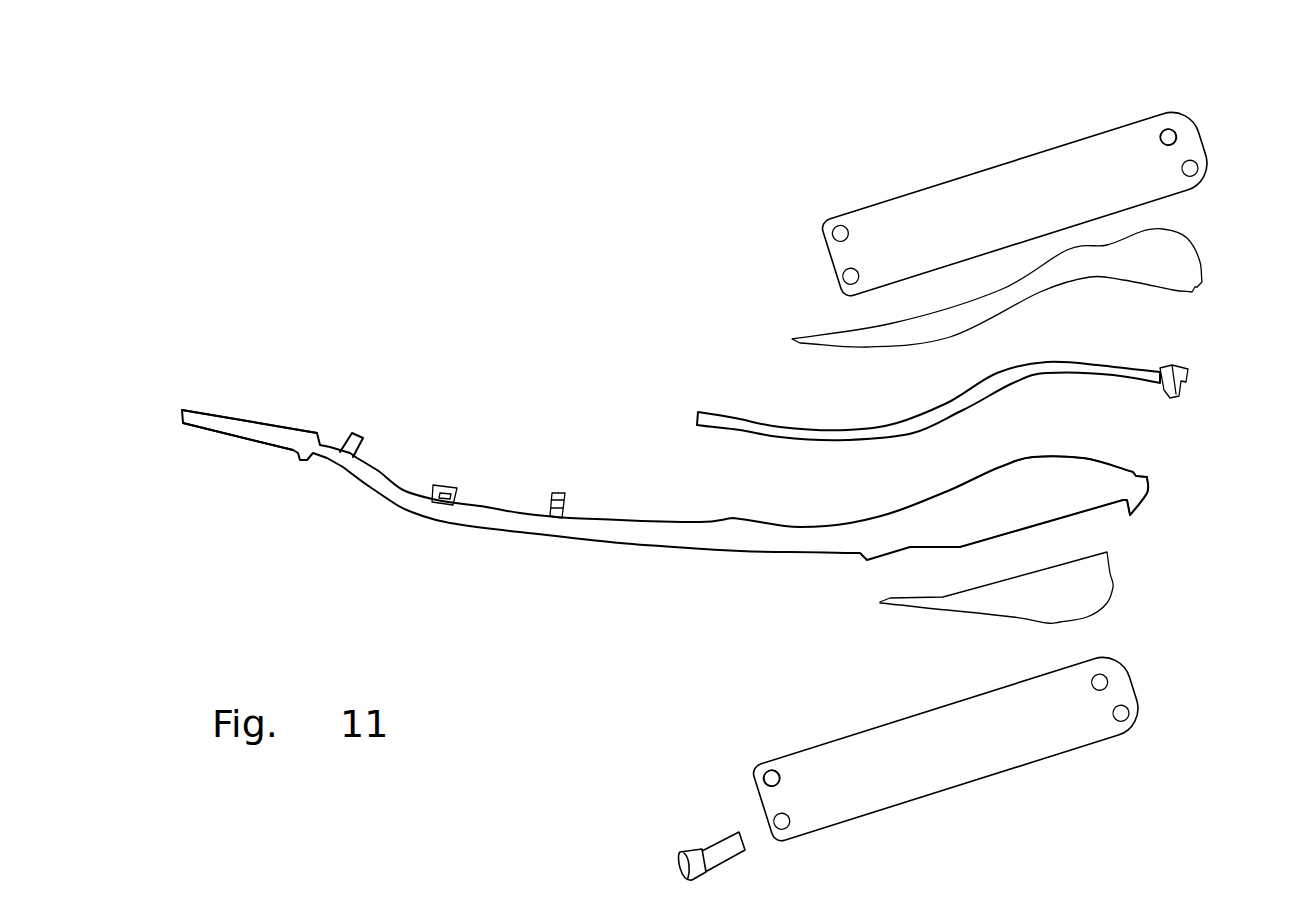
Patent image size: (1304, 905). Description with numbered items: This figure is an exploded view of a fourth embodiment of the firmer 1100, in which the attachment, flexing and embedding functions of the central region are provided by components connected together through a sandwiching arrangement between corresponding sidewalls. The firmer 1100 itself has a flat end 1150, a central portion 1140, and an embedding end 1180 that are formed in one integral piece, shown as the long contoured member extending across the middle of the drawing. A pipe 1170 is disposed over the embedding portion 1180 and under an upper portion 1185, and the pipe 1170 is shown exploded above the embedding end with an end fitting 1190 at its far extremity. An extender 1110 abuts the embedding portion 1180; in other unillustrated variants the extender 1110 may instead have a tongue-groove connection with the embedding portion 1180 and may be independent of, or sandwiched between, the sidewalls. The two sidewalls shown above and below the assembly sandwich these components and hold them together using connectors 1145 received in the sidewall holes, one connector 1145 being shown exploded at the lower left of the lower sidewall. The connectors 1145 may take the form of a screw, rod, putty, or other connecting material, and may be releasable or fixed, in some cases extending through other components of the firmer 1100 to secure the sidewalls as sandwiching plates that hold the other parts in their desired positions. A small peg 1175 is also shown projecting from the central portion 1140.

The firmer 1100 is at (488, 305).
The extender 1110 is at (1088, 593).
The central portion 1140 is at (643, 538).
The connector 1145 is at (683, 857).
The flat end 1150 is at (242, 430).
The pipe 1170 is at (722, 417).
The peg 1175 is at (558, 490).
The embedding end 1180 is at (1087, 461).
The upper portion 1185 is at (1183, 253).
The connector 1190 is at (1175, 370).